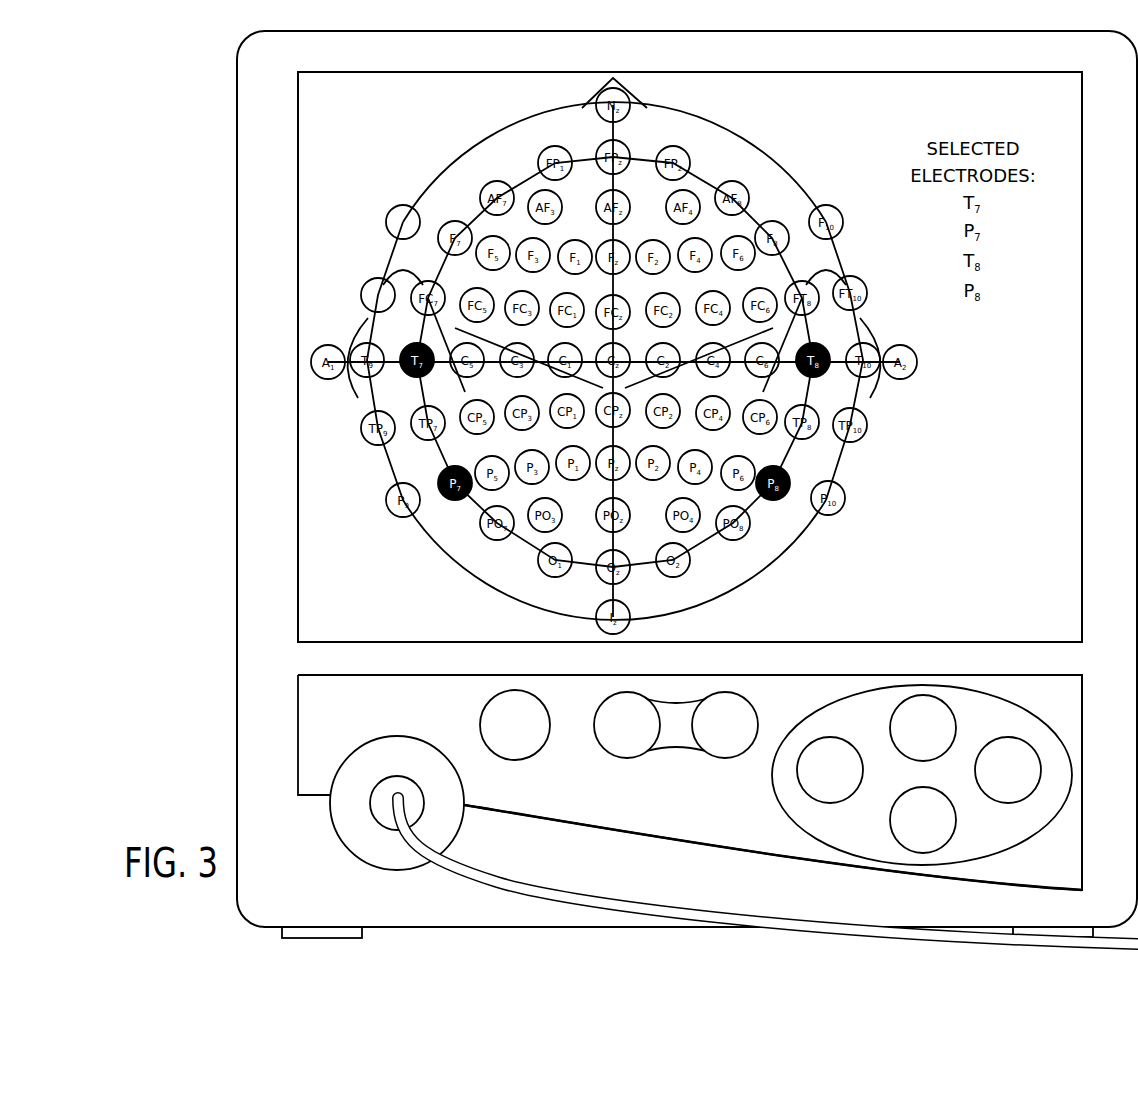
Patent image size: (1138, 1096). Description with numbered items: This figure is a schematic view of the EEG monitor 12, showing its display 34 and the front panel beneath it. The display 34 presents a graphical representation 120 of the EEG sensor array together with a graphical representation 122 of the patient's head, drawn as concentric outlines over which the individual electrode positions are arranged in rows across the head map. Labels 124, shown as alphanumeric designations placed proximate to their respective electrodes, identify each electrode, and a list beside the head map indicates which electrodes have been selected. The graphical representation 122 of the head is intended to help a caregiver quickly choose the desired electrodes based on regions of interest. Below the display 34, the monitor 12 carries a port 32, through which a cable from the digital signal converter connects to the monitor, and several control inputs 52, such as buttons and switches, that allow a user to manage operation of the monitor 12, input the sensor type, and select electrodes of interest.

The EEG monitor 12 is at (237, 463).
The display 34 is at (298, 268).
The port 32 is at (370, 802).
The control inputs 52 is at (508, 762).
The graphical representation of the EEG sensor array 120 is at (726, 170).
The graphical representation of a patient's head 122 is at (503, 130).
The labels 124 is at (392, 213).